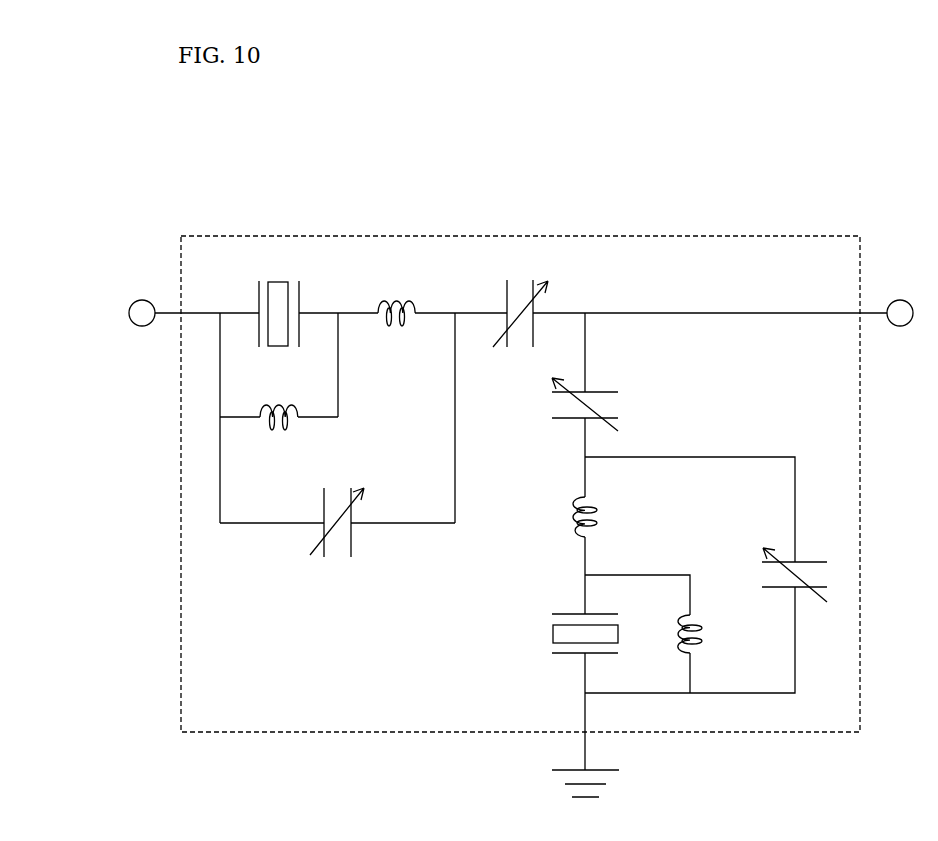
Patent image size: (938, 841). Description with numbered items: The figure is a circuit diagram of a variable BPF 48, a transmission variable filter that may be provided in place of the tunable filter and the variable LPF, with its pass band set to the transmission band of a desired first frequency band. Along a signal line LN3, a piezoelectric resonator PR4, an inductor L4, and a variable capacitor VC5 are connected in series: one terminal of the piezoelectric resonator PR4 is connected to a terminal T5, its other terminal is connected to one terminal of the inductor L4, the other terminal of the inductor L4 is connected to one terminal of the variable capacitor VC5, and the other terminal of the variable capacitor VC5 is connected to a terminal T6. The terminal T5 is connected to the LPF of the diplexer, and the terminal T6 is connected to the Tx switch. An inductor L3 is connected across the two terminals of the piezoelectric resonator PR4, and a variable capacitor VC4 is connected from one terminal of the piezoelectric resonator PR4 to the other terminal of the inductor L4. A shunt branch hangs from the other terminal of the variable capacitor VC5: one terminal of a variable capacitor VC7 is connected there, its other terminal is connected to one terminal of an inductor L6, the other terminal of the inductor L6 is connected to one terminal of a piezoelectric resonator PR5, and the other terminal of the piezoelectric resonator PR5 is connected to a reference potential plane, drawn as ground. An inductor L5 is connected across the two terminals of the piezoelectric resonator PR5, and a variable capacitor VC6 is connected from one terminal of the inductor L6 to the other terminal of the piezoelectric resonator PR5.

The variable BPF 48 is at (520, 484).
The terminal T5 is at (140, 299).
The terminal T6 is at (902, 299).
The signal line LN3 is at (697, 312).
The piezoelectric resonator PR4 is at (279, 300).
The piezoelectric resonator PR5 is at (580, 622).
The inductor L3 is at (279, 404).
The inductor L4 is at (396, 298).
The inductor L5 is at (705, 634).
The inductor L6 is at (600, 517).
The variable capacitor VC4 is at (337, 508).
The variable capacitor VC5 is at (520, 299).
The variable capacitor VC6 is at (771, 575).
The variable capacitor VC7 is at (607, 404).